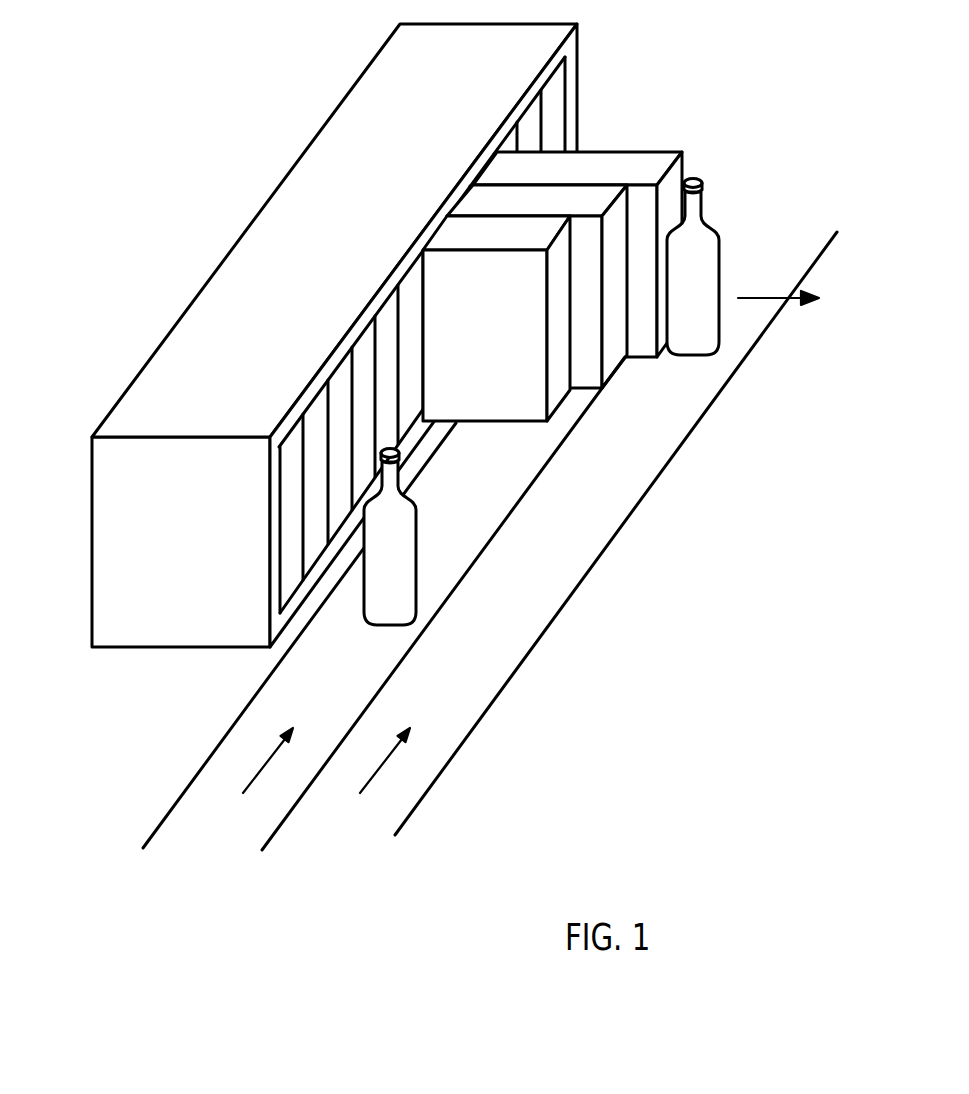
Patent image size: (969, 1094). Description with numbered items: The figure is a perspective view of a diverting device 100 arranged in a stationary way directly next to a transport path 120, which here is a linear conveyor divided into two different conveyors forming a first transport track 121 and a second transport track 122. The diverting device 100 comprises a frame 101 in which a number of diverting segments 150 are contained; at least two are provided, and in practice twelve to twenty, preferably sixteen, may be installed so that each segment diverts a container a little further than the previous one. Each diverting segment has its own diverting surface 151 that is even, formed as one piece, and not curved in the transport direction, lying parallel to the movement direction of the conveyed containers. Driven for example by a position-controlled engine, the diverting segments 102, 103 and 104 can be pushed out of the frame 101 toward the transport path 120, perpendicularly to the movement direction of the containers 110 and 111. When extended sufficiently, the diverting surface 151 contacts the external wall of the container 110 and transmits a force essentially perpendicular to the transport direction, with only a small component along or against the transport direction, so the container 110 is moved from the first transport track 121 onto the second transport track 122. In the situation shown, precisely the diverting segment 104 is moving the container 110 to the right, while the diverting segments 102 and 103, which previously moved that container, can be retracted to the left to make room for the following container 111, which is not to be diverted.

The diverting device 100 is at (95, 697).
The frame 101 is at (92, 484).
The diverting segment 102 is at (497, 413).
The diverting segment 103 is at (615, 358).
The diverting segment 104 is at (630, 163).
The container 110 is at (708, 252).
The container 111 is at (408, 538).
The transport path 120 is at (250, 871).
The first transport track 121 is at (195, 822).
The second transport track 122 is at (313, 822).
The diverting segments 150 is at (344, 531).
The diverting surface 151 is at (388, 315).